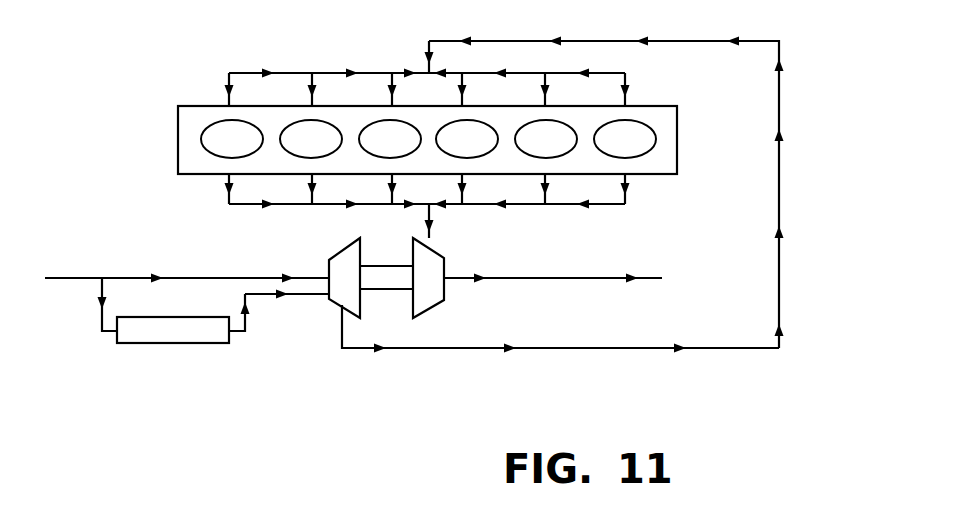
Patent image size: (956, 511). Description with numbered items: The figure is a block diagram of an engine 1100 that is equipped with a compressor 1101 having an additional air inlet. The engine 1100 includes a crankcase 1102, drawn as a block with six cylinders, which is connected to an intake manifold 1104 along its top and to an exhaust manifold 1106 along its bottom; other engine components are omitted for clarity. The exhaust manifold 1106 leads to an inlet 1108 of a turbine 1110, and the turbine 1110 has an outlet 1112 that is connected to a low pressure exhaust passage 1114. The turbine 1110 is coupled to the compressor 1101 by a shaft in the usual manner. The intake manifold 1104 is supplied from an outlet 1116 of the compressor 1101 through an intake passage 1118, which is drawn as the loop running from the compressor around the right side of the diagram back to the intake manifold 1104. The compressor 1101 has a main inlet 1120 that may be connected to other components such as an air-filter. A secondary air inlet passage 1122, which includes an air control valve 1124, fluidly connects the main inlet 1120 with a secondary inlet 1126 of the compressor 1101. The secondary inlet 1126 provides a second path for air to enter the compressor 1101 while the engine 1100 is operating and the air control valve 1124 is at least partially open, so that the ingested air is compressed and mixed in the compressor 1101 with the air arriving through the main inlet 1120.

The engine 1100 is at (150, 404).
The compressor 1101 is at (352, 302).
The crankcase 1102 is at (178, 130).
The intake manifold 1104 is at (340, 73).
The exhaust manifold 1106 is at (300, 207).
The inlet 1108 is at (428, 247).
The turbine 1110 is at (430, 308).
The outlet 1112 is at (450, 278).
The low pressure exhaust passage 1114 is at (607, 273).
The outlet 1116 is at (340, 310).
The intake passage 1118 is at (780, 258).
The main inlet 1120 is at (317, 276).
The secondary air inlet passage 1122 is at (302, 295).
The air control valve 1124 is at (185, 343).
The secondary inlet 1126 is at (325, 300).